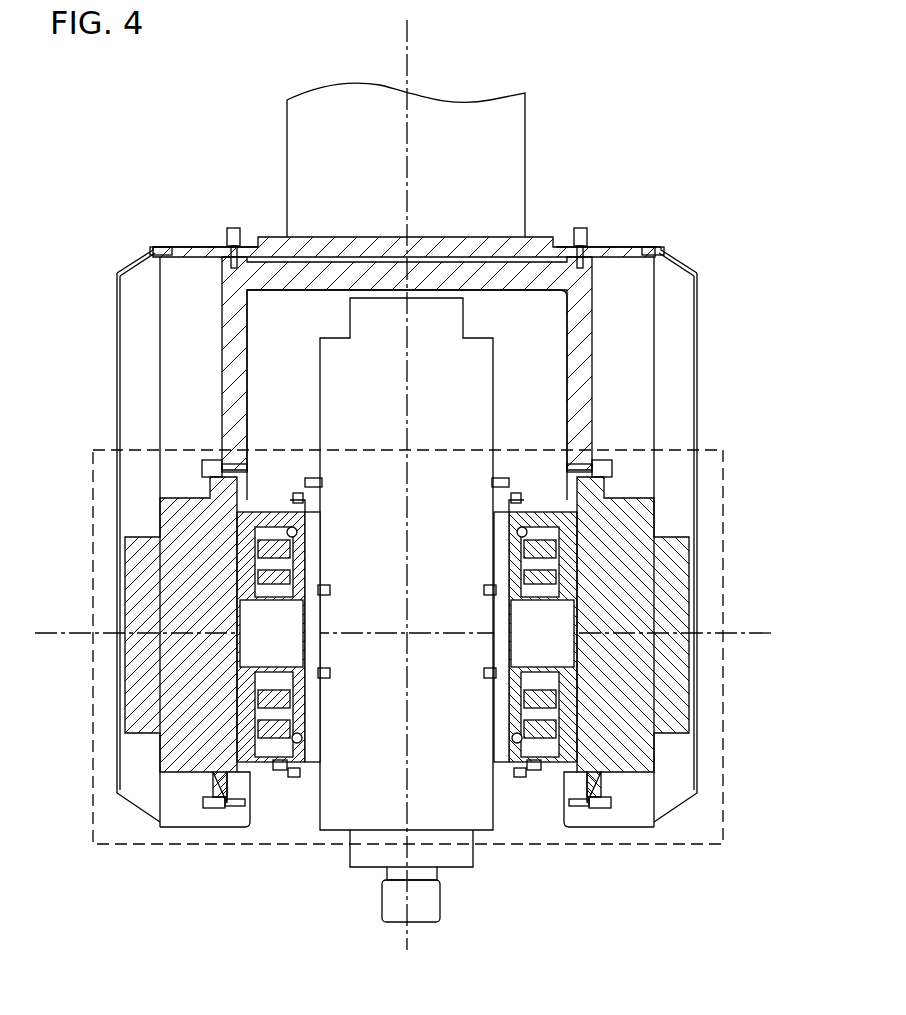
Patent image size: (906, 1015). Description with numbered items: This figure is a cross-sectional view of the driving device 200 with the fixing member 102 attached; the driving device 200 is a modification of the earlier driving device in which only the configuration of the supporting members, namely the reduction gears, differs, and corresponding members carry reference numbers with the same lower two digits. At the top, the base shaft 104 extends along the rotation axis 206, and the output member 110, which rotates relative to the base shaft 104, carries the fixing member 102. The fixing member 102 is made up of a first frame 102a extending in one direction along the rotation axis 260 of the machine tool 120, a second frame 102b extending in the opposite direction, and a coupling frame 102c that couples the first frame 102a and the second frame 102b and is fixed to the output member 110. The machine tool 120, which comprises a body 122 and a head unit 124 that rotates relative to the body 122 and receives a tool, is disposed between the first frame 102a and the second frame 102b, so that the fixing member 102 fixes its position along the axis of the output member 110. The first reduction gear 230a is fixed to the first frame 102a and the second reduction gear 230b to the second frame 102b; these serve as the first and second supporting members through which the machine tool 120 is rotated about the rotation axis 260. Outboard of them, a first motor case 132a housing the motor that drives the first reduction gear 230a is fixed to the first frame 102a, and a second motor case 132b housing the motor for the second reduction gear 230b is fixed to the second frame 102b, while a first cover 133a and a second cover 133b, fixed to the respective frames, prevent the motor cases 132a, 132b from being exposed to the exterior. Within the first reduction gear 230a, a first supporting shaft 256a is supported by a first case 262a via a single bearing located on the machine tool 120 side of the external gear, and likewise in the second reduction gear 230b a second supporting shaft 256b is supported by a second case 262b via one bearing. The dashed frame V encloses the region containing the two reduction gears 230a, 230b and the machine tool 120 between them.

The driving device 200 is at (406, 490).
The rotation axis 206 is at (407, 42).
The base shaft 104 is at (510, 148).
The fixing member 102 is at (409, 321).
The first frame 102a is at (580, 385).
The second frame 102b is at (233, 385).
The coupling frame 102c is at (540, 272).
The output member 110 is at (276, 250).
The machine tool 120 is at (507, 360).
The body 122 is at (482, 376).
The head unit 124 is at (427, 908).
The first cover 133a is at (697, 428).
The second cover 133b is at (117, 426).
The first motor case 132a is at (686, 710).
The second motor case 132b is at (126, 711).
The first supporting shaft 256a is at (602, 482).
The second supporting shaft 256b is at (212, 478).
The first case 262a is at (556, 524).
The second case 262b is at (258, 520).
The first reduction gear 230a is at (535, 800).
The second reduction gear 230b is at (285, 800).
The rotation axis 260 is at (750, 636).
The section region V is at (724, 462).